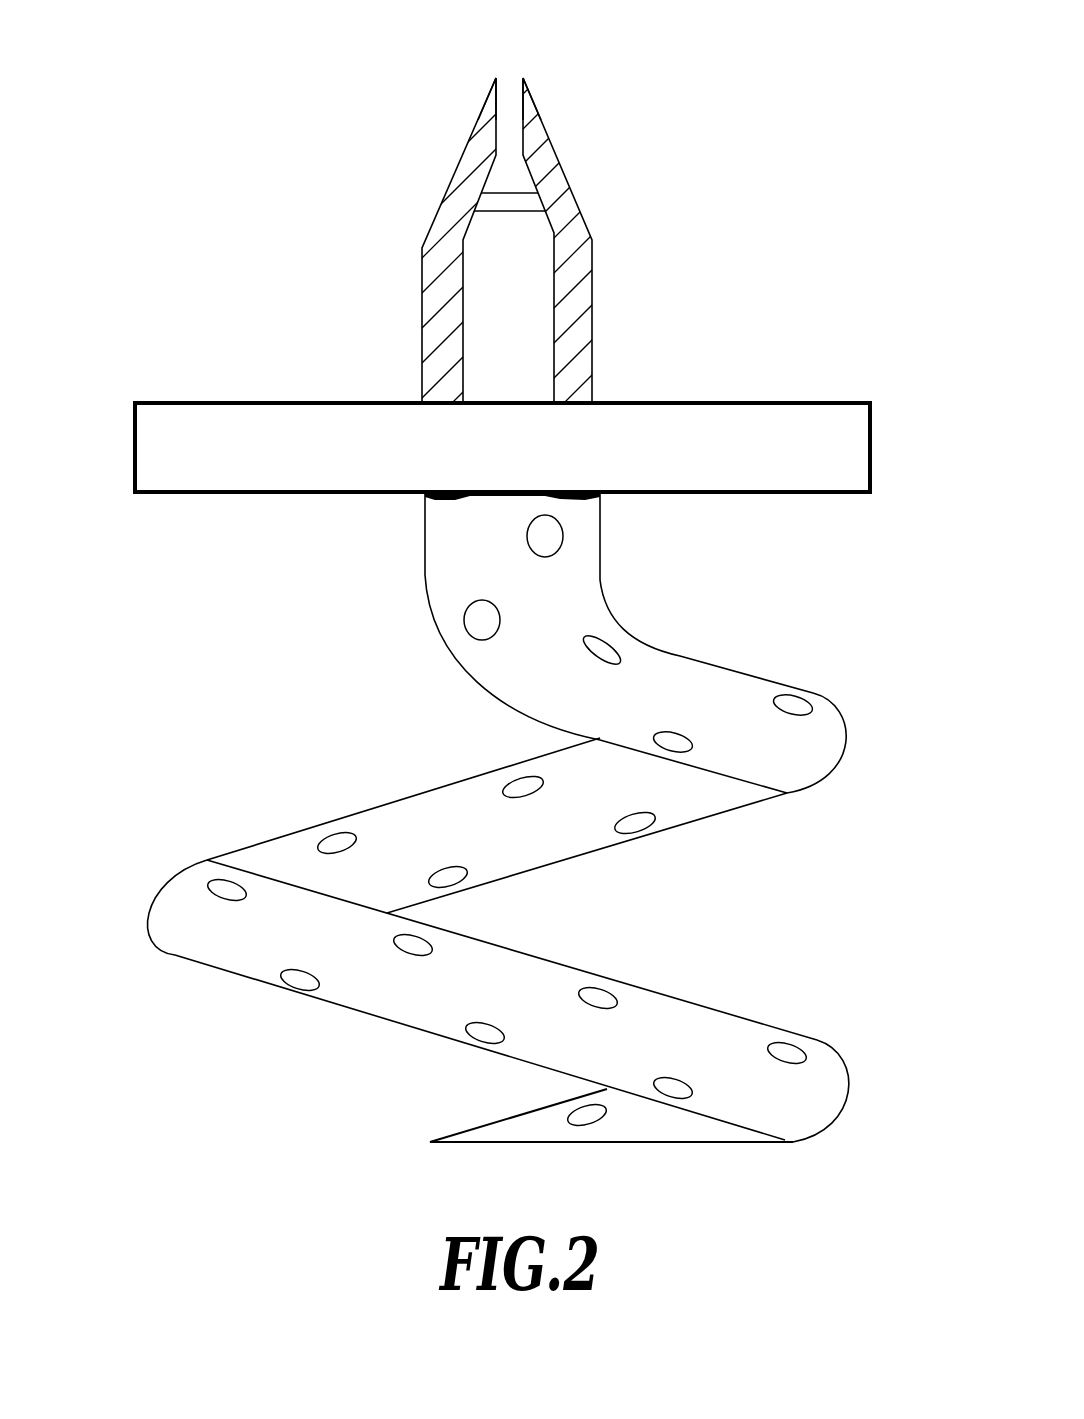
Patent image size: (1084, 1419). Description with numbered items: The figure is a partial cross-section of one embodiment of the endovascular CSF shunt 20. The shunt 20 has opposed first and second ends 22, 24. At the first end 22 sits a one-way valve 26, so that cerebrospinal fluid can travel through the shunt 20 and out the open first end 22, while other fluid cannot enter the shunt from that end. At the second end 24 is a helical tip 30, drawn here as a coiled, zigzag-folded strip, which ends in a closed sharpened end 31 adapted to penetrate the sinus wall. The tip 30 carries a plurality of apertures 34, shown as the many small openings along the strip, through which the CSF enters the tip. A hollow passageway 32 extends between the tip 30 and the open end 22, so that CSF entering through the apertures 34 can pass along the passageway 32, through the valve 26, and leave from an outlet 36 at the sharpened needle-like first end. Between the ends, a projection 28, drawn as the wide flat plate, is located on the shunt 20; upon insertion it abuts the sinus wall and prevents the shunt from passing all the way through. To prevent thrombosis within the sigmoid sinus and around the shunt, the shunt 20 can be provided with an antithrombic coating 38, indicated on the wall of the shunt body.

The endovascular CSF shunt 20 is at (245, 265).
The first end 22 is at (495, 206).
The second end 24 is at (480, 843).
The one-way valve 26 is at (522, 200).
The projection 28 is at (805, 417).
The helical tip 30 is at (187, 942).
The closed sharpened end 31 is at (430, 1143).
The hollow passageway 32 is at (493, 325).
The apertures 34 is at (343, 830).
The outlet 36 is at (508, 83).
The antithrombic coating 38 is at (580, 332).